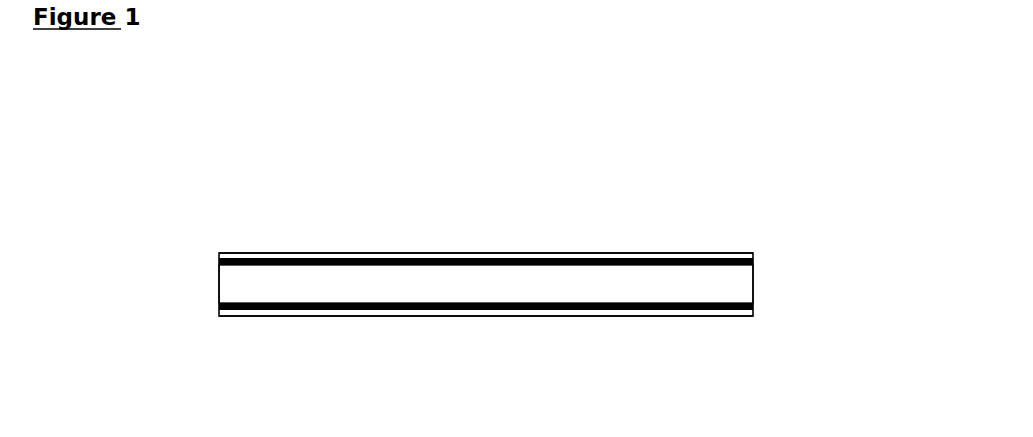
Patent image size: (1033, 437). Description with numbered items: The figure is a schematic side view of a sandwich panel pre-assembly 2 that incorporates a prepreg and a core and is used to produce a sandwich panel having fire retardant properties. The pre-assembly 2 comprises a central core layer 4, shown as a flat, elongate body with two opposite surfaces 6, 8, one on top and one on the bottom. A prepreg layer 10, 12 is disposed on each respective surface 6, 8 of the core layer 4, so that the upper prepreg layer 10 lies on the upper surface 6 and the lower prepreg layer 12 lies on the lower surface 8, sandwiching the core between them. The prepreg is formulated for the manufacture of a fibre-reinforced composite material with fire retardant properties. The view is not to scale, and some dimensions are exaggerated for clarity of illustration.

The sandwich panel pre-assembly 2 is at (320, 204).
The central core layer 4 is at (463, 282).
The surface 6 is at (677, 258).
The surface 8 is at (342, 307).
The prepreg layer 10 is at (579, 252).
The prepreg layer 12 is at (518, 317).